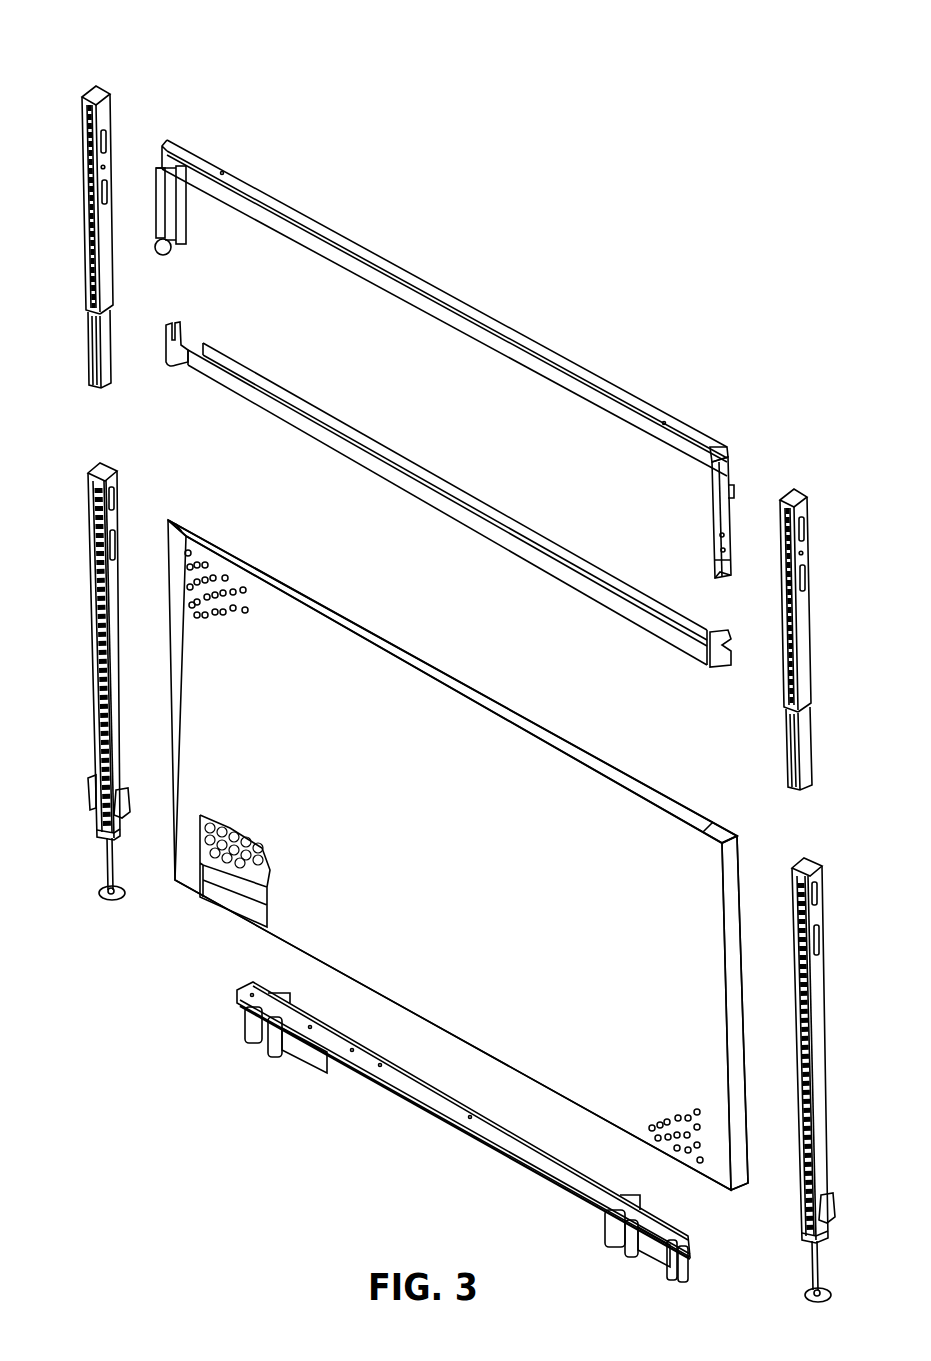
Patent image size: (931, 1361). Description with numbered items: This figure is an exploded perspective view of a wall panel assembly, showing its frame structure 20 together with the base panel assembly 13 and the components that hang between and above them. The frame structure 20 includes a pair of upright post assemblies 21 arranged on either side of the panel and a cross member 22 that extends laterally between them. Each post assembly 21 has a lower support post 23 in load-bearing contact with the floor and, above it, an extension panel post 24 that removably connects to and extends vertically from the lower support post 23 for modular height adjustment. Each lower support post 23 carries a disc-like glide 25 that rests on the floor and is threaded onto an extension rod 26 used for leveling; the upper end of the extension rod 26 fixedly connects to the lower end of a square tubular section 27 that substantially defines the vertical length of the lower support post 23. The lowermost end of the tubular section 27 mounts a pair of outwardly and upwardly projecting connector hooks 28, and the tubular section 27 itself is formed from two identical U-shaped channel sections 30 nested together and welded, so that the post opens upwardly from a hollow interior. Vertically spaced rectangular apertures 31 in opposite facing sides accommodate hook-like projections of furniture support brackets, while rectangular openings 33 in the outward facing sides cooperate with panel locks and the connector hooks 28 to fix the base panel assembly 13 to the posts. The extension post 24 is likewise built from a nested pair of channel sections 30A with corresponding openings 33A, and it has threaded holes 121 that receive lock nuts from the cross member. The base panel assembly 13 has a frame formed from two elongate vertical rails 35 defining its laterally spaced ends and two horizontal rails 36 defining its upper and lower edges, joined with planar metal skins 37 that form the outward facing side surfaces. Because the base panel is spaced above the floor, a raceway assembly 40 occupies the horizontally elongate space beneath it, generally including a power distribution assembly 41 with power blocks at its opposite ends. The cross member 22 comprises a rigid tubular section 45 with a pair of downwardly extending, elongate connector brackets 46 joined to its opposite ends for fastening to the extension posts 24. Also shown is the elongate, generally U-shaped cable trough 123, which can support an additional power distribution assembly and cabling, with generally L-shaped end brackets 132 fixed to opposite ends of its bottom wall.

The base panel assembly 13 is at (478, 833).
The frame structure 20 is at (444, 359).
The upright post assembly 21 is at (455, 883).
The cross member 22 is at (445, 308).
The lower support post 23 is at (102, 634).
The extension panel post 24 is at (452, 399).
The glide 25 is at (115, 900).
The extension rod 26 is at (107, 868).
The square tubular section 27 is at (94, 834).
The connector hook 28 is at (121, 805).
The U-shaped channel section 30 is at (97, 470).
The channel section 30A is at (93, 88).
The aperture 31 is at (95, 597).
The opening 33 is at (112, 498).
The opening 33A is at (805, 577).
The vertical rail 35 is at (178, 518).
The horizontal rail 36 is at (308, 600).
The planar metal skin 37 is at (405, 688).
The raceway assembly 40 is at (435, 1132).
The power distribution assembly 41 is at (261, 1046).
The rigid tubular section 45 is at (377, 257).
The connector bracket 46 is at (189, 222).
The threaded hole 121 is at (104, 166).
The cable trough 123 is at (448, 511).
The end bracket 132 is at (173, 304).